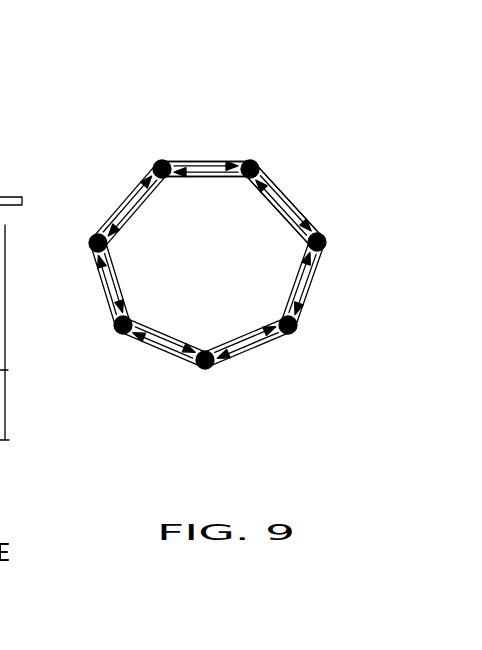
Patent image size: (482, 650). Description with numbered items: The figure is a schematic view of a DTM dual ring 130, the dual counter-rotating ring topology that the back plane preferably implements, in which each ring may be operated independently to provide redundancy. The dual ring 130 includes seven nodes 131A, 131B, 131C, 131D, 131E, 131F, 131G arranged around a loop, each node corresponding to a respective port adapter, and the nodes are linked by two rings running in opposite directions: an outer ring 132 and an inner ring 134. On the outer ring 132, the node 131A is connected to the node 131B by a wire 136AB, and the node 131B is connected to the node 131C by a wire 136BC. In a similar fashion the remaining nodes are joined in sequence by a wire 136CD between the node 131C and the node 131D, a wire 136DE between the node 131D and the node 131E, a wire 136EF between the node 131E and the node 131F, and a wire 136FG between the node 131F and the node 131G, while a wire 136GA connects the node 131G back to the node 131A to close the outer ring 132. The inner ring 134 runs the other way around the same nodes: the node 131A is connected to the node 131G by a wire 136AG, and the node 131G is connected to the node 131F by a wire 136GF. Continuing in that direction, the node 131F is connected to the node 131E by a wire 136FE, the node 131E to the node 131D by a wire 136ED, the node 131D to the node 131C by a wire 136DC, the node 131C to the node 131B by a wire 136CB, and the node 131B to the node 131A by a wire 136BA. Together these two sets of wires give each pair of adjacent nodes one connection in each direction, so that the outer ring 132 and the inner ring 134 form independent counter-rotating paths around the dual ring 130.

The dual ring 130 is at (239, 248).
The node 131A is at (154, 163).
The node 131B is at (252, 162).
The node 131C is at (326, 239).
The node 131D is at (295, 332).
The node 131E is at (205, 370).
The node 131F is at (116, 335).
The node 131G is at (92, 240).
The outer ring 132 is at (283, 214).
The inner ring 134 is at (223, 177).
The wire 136AB is at (207, 160).
The wire 136BA is at (216, 176).
The wire 136BC is at (265, 192).
The wire 136CB is at (268, 197).
The wire 136CD is at (310, 283).
The wire 136DC is at (296, 290).
The wire 136DE is at (280, 345).
The wire 136ED is at (229, 342).
The wire 136EF is at (153, 352).
The wire 136FE is at (157, 335).
The wire 136FG is at (116, 286).
The wire 136GF is at (108, 306).
The wire 136GA is at (133, 186).
The wire 136AG is at (141, 199).